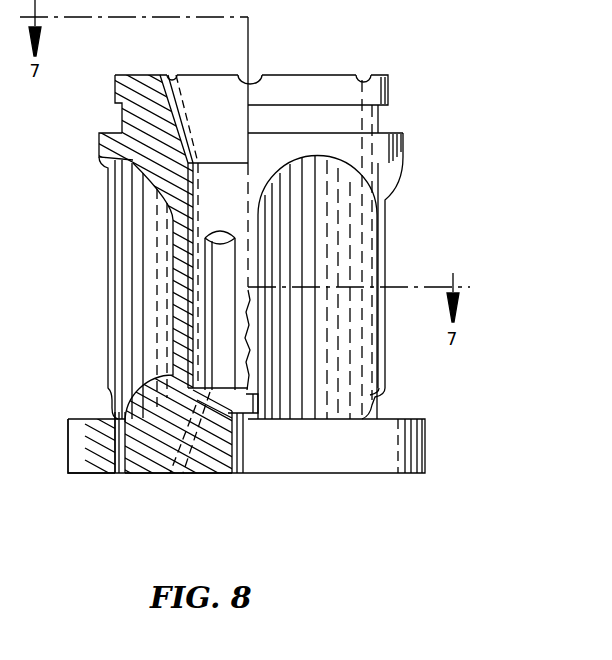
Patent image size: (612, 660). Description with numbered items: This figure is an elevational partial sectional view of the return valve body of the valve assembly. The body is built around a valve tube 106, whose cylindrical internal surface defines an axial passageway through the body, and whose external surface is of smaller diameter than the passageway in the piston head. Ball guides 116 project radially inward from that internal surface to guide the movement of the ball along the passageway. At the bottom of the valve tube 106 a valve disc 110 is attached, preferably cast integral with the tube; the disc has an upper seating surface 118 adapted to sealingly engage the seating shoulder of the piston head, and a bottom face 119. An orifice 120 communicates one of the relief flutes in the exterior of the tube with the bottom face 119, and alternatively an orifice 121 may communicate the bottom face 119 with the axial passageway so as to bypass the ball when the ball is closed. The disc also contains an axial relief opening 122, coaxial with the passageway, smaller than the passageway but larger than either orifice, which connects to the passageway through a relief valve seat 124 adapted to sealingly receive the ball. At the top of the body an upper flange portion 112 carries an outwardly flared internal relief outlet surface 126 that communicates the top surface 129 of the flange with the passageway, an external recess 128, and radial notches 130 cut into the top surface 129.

The valve tube 106 is at (180, 267).
The valve disc 110 is at (160, 452).
The upper flange portion 112 is at (128, 85).
The ball guides 116 is at (224, 258).
The upper seating surface 118 is at (83, 419).
The bottom face 119 is at (202, 473).
The orifice 120 is at (121, 473).
The orifice 121 is at (196, 432).
The axial relief opening 122 is at (205, 398).
The relief valve seat 124 is at (258, 418).
The relief outlet surface 126 is at (183, 118).
The external recess 128 is at (122, 117).
The top surface 129 is at (140, 72).
The radial notches 130 is at (363, 82).